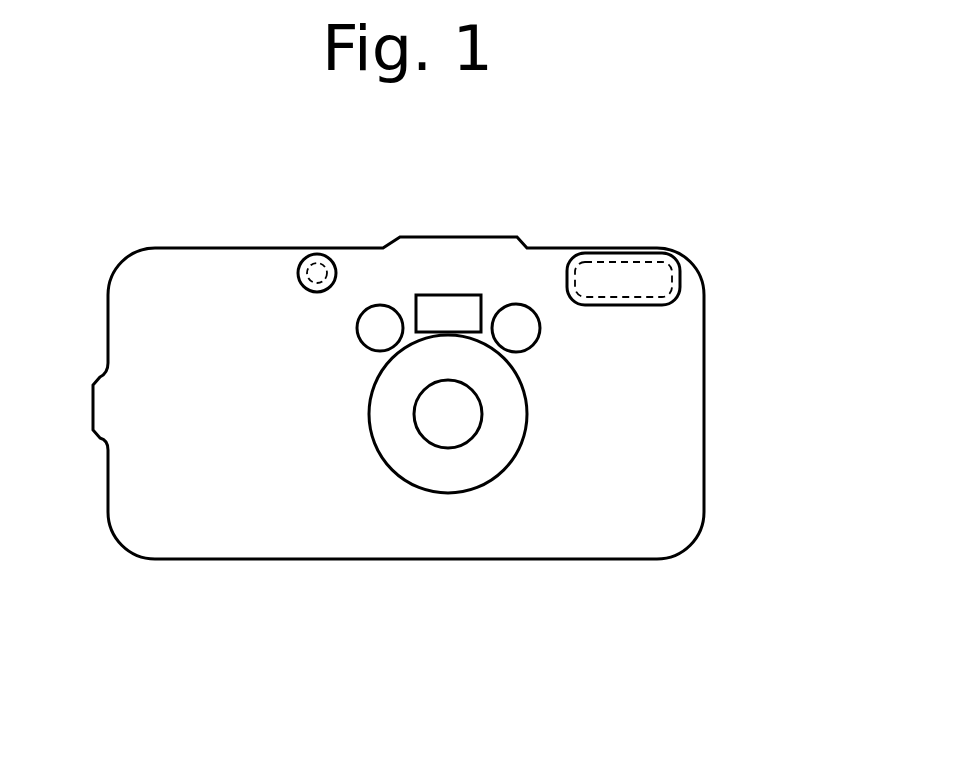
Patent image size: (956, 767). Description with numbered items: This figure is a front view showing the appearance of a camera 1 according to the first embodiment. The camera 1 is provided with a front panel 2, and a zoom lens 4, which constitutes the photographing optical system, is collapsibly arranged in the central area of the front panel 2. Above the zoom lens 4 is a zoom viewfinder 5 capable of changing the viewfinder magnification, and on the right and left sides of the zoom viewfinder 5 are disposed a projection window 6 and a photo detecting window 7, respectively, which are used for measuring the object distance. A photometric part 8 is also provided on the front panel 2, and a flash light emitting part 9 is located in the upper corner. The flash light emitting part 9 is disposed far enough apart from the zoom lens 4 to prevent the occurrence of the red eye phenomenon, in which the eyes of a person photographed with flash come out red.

The camera 1 is at (734, 402).
The front panel 2 is at (602, 492).
The zoom lens 4 is at (427, 440).
The zoom viewfinder 5 is at (452, 295).
The projection window 6 is at (519, 305).
The photo detecting window 7 is at (370, 305).
The photometric part 8 is at (304, 258).
The flash light emitting part 9 is at (620, 254).